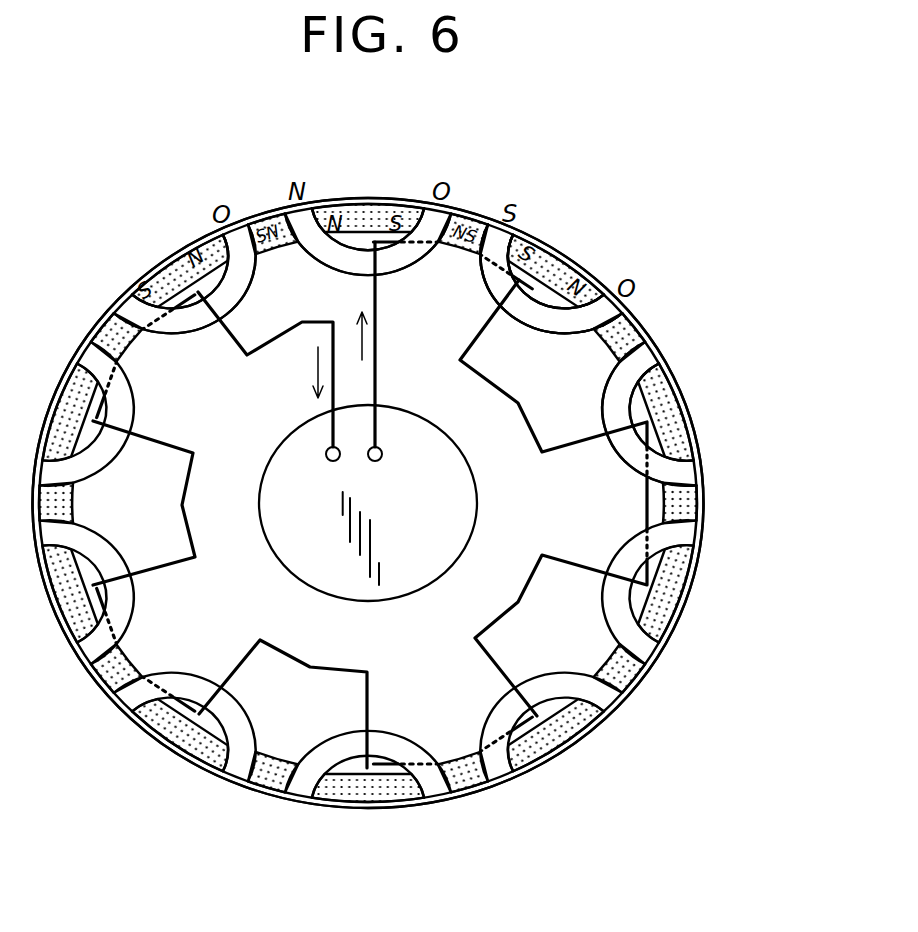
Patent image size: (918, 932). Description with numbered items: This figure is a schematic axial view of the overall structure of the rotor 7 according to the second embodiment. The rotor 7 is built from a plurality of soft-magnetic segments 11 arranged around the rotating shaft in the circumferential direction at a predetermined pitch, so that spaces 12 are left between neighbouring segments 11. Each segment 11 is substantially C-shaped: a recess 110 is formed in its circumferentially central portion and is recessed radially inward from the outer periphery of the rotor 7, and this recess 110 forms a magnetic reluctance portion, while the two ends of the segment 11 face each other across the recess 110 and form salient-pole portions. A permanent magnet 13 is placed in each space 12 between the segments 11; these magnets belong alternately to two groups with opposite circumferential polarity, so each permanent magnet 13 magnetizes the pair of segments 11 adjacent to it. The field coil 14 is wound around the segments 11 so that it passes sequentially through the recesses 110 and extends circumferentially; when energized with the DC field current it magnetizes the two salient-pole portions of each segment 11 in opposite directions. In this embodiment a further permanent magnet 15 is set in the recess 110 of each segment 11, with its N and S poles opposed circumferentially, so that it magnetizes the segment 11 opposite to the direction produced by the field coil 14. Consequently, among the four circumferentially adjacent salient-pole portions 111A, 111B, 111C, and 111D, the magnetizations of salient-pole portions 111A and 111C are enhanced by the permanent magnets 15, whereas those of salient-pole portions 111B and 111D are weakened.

The rotor 7 is at (623, 180).
The segment 11 is at (690, 538).
The recess 110 is at (588, 746).
The space 12 is at (654, 311).
The permanent magnet 13 is at (262, 220).
The field coil 14 is at (378, 368).
The permanent magnet 15 is at (372, 210).
The salient-pole portion 111A is at (305, 205).
The salient-pole portion 111B is at (448, 210).
The salient-pole portion 111C is at (515, 233).
The salient-pole portion 111D is at (605, 290).